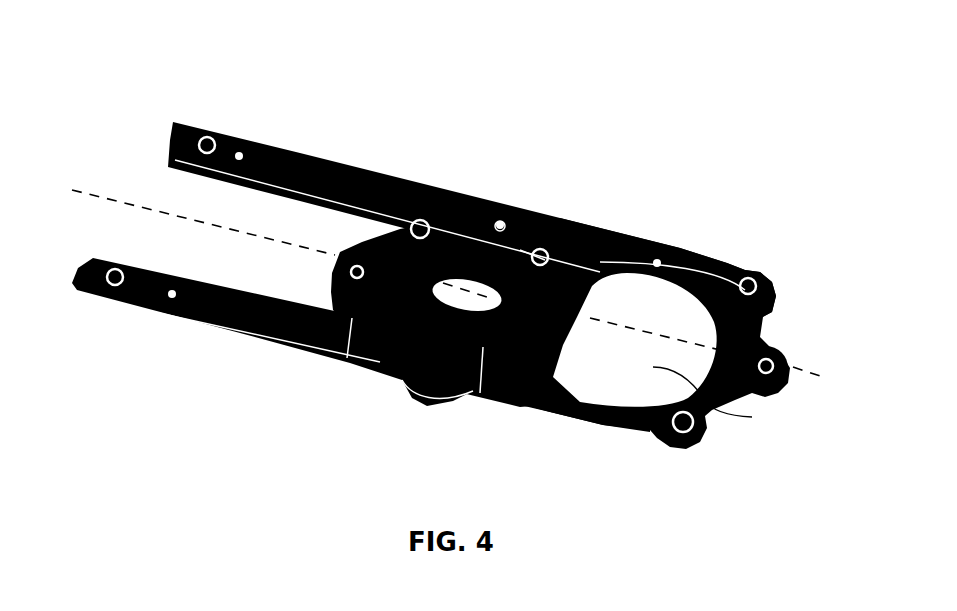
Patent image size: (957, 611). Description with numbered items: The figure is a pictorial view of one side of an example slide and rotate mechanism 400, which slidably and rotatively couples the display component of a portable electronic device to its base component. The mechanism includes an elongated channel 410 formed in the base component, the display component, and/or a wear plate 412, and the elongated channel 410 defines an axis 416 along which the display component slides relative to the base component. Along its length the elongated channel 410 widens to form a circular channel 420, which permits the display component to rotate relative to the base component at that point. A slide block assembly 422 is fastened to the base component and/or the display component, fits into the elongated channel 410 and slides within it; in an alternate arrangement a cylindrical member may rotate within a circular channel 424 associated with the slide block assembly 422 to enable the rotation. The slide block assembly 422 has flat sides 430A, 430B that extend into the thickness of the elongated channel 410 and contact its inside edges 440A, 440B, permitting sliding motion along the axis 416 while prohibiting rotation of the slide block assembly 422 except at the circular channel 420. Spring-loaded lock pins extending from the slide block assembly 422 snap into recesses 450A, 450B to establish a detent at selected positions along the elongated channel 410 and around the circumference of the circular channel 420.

The slide and rotate mechanism 400 is at (467, 226).
The elongated channel 410 is at (198, 197).
The wear plate 412 is at (683, 248).
The axis 416 is at (800, 367).
The circular channel 420 is at (673, 352).
The slide block assembly 422 is at (593, 287).
The circular channel 424 is at (480, 393).
The flat side 430A is at (520, 250).
The flat side 430B is at (347, 358).
The inside edge 440A is at (218, 281).
The inside edge 440B is at (324, 209).
The recess 450A is at (498, 217).
The recess 450B is at (414, 400).